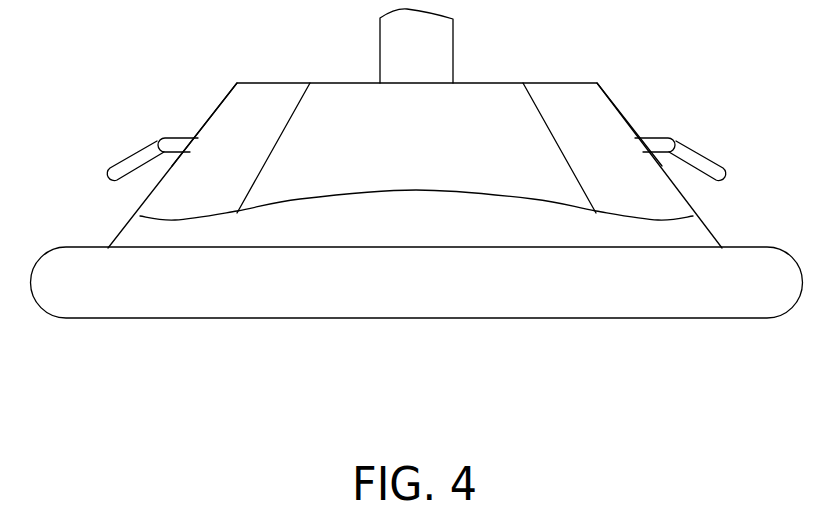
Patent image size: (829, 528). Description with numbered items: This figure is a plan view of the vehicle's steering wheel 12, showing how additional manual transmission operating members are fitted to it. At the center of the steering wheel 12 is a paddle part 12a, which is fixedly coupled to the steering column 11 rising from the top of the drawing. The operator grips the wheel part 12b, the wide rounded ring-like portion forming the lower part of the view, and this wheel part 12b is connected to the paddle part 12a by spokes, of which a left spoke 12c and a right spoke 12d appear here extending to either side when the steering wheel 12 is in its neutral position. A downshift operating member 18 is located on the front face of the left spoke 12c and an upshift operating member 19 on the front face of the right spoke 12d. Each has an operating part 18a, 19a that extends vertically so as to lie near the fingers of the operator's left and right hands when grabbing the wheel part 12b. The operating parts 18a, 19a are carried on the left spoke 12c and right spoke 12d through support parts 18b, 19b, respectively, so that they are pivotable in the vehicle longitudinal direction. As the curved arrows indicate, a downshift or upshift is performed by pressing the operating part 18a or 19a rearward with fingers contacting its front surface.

The steering column 11 is at (380, 53).
The steering wheel 12 is at (417, 209).
The paddle part 12a is at (478, 112).
The wheel part 12b is at (172, 292).
The left spoke 12c is at (263, 112).
The right spoke 12d is at (568, 110).
The downshift operating member 18 is at (114, 122).
The operating part 18a is at (90, 213).
The support part 18b is at (197, 138).
The upshift operating member 19 is at (723, 122).
The operating part 19a is at (743, 213).
The support part 19b is at (636, 138).